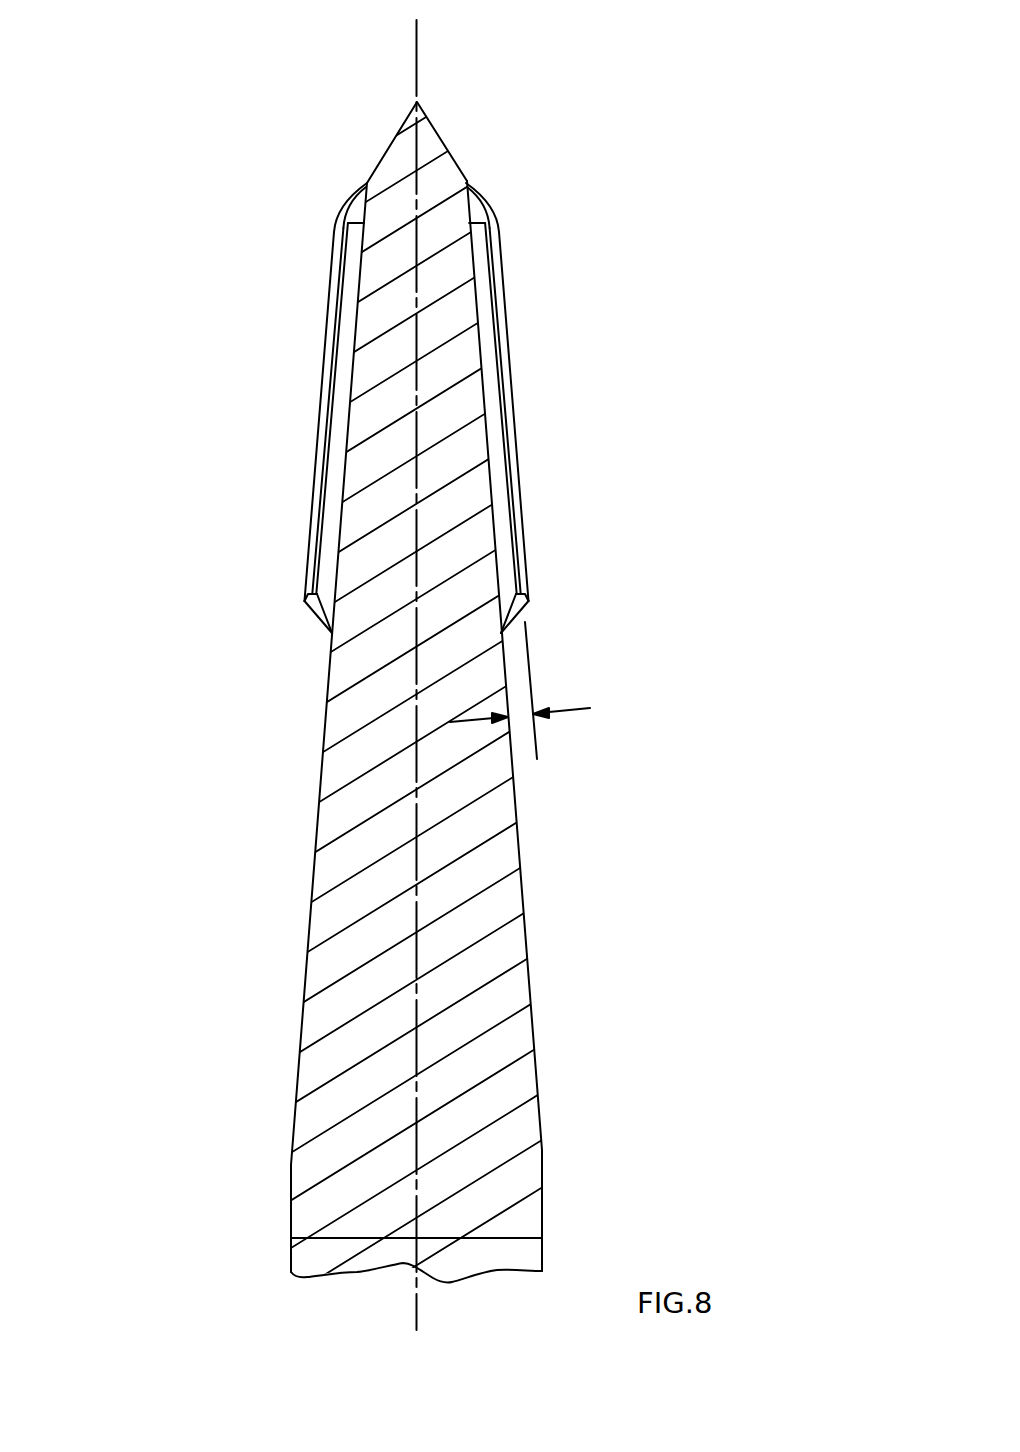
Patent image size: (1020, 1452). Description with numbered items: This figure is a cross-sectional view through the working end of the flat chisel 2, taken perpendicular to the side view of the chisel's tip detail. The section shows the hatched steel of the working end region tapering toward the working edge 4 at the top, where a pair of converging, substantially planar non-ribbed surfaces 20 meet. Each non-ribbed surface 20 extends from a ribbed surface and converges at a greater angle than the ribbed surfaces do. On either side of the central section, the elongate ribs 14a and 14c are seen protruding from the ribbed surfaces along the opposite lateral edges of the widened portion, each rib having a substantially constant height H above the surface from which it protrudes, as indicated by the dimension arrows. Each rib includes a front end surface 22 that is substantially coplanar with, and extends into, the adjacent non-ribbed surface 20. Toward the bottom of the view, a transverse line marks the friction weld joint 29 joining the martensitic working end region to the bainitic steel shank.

The flat chisel 2 is at (582, 246).
The working edge 4 is at (422, 97).
The non-ribbed surface 20 is at (382, 155).
The front end surface 22 is at (458, 163).
The elongate rib 14a is at (520, 492).
The elongate rib 14c is at (313, 488).
The weld joint 29 is at (487, 1238).
The rib height H is at (542, 690).